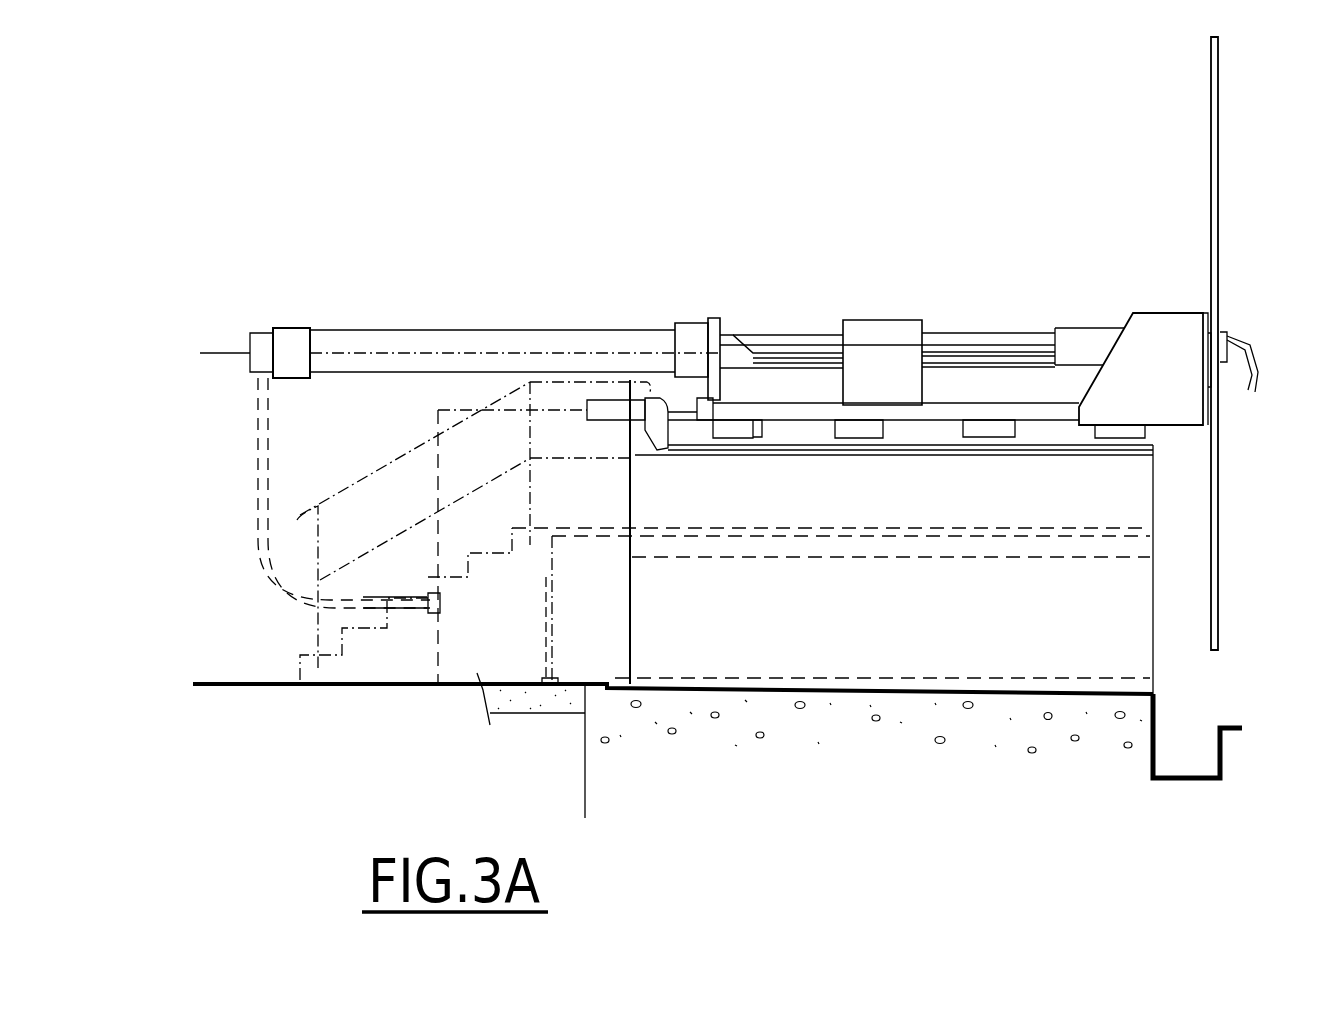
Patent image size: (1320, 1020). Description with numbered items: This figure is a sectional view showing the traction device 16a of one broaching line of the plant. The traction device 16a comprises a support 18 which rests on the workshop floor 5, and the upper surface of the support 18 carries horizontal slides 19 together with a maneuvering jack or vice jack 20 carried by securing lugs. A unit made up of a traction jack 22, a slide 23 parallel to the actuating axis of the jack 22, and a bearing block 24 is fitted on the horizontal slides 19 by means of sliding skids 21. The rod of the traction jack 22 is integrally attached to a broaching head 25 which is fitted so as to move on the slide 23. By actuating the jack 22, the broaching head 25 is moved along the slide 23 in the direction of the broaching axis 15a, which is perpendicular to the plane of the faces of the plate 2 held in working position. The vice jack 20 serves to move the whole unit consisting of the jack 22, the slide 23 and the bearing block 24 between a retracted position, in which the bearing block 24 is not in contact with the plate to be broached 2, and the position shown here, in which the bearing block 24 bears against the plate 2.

The plate 2 is at (1218, 98).
The workshop floor 5 is at (717, 745).
The broaching axis 15a is at (215, 357).
The traction device 16a is at (667, 262).
The support 18 is at (831, 532).
The horizontal slides 19 is at (1112, 448).
The vice jack 20 is at (612, 410).
The sliding skids 21 is at (856, 425).
The traction jack 22 is at (372, 340).
The slide 23 is at (1043, 412).
The bearing block 24 is at (1190, 408).
The broaching head 25 is at (880, 348).